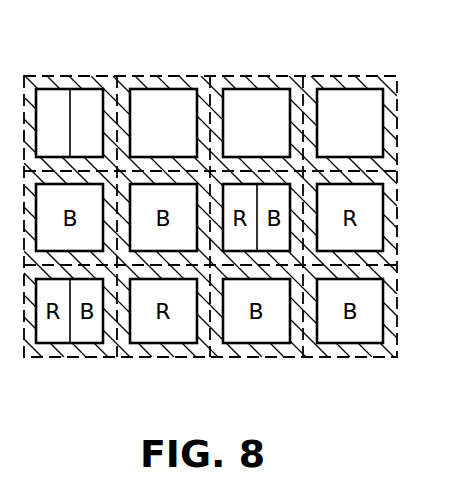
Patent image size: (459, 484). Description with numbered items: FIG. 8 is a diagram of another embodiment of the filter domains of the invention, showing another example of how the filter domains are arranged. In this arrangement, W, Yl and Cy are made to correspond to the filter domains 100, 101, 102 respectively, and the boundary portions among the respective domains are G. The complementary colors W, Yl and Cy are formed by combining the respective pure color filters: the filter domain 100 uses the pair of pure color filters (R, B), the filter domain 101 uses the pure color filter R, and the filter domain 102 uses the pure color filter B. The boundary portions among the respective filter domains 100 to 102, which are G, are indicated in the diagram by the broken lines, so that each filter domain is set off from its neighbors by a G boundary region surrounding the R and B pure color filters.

The filter domain 100 is at (87, 73).
The filter domain 101 is at (174, 73).
The filter domain 102 is at (268, 73).
The boundary portion G is at (397, 311).